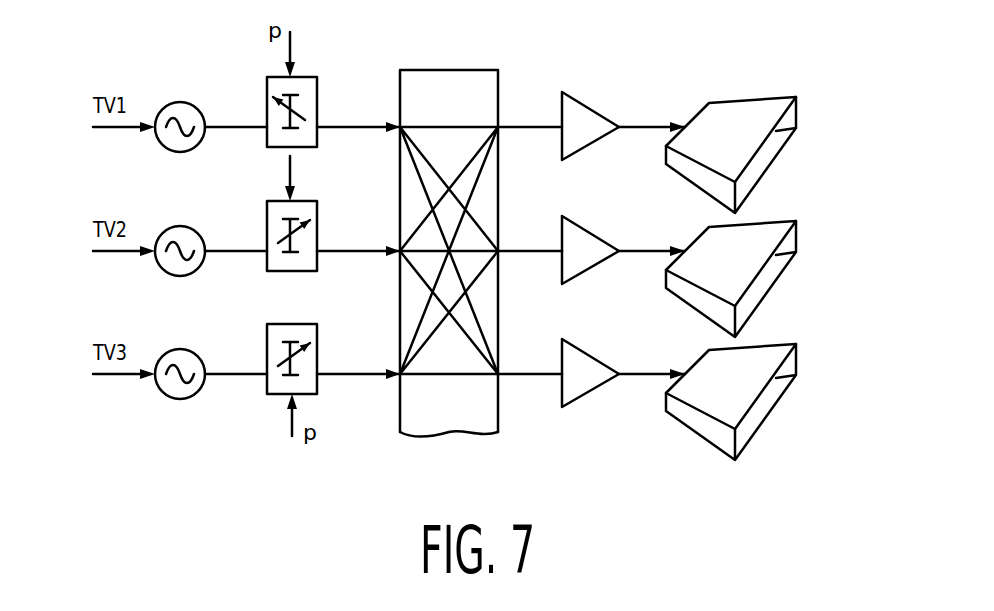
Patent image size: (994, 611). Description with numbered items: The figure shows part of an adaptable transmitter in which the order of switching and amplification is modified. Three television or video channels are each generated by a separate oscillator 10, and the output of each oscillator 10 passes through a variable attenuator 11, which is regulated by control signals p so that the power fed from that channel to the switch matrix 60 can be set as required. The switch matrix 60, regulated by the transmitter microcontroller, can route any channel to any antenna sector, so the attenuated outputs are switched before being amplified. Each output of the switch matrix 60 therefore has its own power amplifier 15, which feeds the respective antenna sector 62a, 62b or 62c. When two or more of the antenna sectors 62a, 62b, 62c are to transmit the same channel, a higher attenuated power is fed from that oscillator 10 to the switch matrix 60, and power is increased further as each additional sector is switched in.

The oscillator 10 is at (181, 108).
The variable attenuator 11 is at (310, 88).
The switch matrix 60 is at (463, 111).
The power amplifier 15 is at (585, 120).
The antenna sector 62a is at (780, 140).
The antenna sector 62b is at (780, 264).
The antenna sector 62c is at (780, 387).